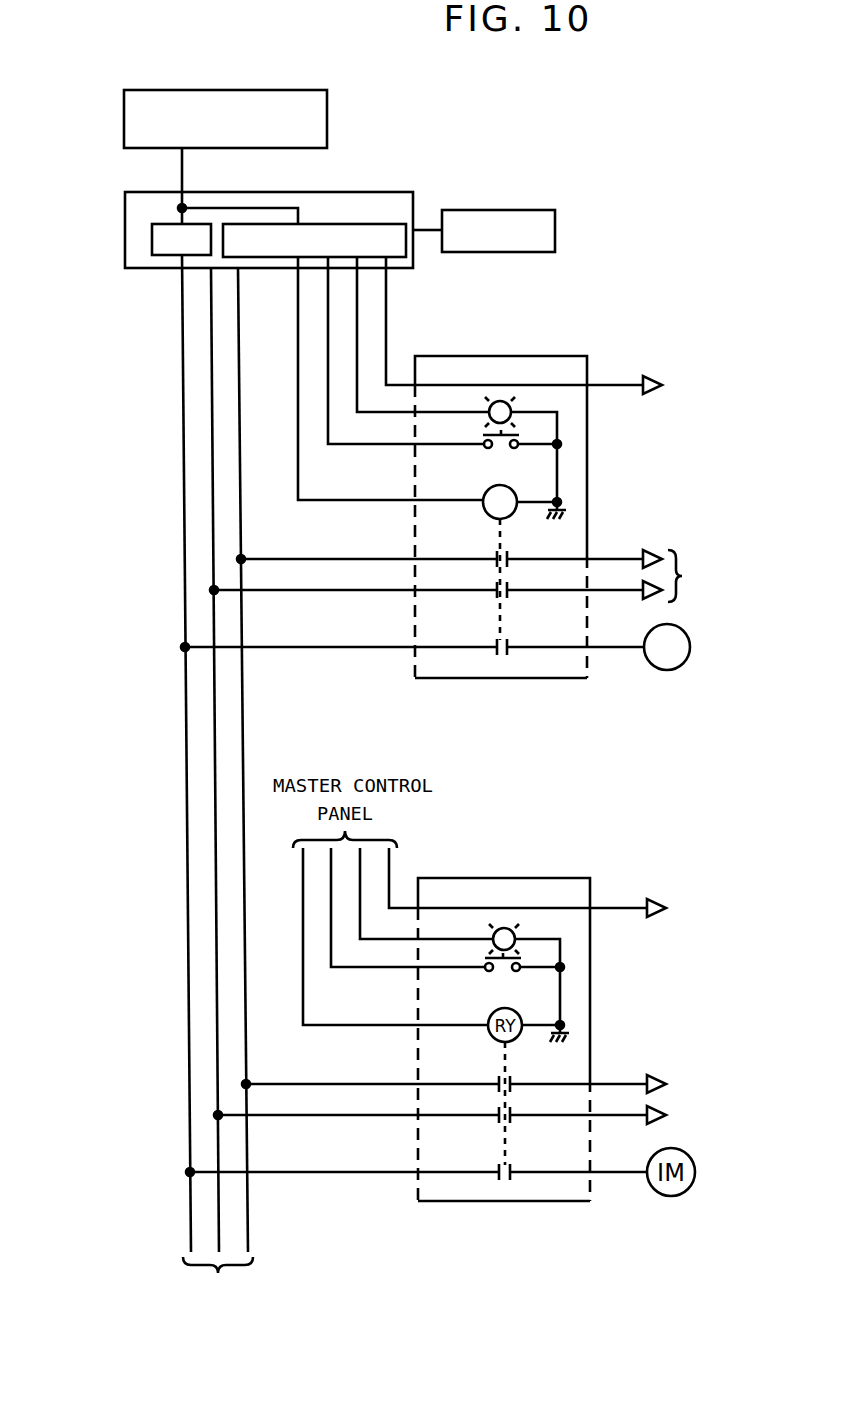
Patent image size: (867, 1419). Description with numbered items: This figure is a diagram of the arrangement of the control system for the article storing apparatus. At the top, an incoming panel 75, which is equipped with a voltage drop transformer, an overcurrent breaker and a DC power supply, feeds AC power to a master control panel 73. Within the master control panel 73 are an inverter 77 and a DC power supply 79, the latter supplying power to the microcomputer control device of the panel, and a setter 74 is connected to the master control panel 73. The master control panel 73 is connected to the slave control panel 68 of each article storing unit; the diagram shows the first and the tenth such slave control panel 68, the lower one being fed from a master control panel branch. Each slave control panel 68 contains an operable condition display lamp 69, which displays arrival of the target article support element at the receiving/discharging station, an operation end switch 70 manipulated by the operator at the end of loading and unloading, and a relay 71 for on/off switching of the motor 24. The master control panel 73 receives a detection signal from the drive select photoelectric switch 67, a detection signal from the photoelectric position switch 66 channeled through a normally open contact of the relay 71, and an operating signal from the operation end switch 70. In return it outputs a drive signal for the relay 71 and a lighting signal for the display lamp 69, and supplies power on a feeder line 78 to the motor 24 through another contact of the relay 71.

The incoming panel 75 is at (124, 128).
The master control panel 73 is at (125, 232).
The inverter 77 is at (152, 236).
The DC power supply 79 is at (338, 224).
The setter 74 is at (508, 210).
The feeder line 78 is at (218, 1276).
The slave control panel 68 is at (587, 368).
The drive select photoelectric switch 67 is at (663, 380).
The operable condition display lamp 69 is at (510, 403).
The operation end switch 70 is at (500, 447).
The relay 71 is at (504, 485).
The photoelectric position switch 66 is at (682, 576).
The motor 24 is at (683, 631).